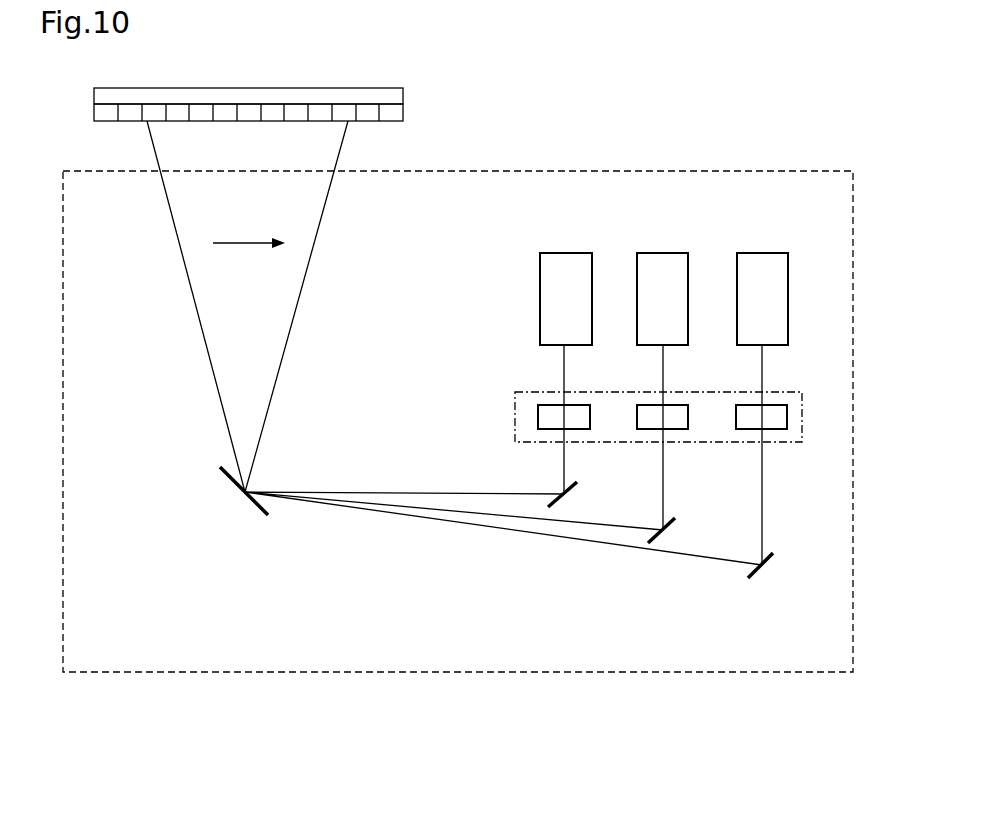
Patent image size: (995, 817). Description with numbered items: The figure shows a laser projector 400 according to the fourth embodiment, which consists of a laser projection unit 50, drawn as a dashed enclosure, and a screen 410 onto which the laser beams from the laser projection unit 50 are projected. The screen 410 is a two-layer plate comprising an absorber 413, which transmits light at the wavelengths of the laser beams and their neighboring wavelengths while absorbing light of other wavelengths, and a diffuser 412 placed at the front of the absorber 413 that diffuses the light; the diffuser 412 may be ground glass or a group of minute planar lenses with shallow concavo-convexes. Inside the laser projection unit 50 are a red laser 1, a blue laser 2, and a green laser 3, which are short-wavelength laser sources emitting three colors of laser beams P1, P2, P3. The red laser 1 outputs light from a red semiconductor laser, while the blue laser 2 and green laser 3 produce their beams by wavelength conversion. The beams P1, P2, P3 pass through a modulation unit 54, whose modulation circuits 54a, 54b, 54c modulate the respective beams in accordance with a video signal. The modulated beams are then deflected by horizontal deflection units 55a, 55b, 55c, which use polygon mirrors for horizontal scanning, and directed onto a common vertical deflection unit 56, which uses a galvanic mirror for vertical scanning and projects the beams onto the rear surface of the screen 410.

The laser projector 400 is at (676, 90).
The screen 410 is at (498, 56).
The absorber 413 is at (404, 96).
The diffuser 412 is at (404, 114).
The laser projection unit 50 is at (596, 673).
The red laser 1 is at (570, 252).
The blue laser 2 is at (668, 252).
The green laser 3 is at (767, 252).
The laser beam P1 is at (565, 352).
The laser beam P2 is at (664, 352).
The laser beam P3 is at (763, 352).
The modulation unit 54 is at (521, 392).
The modulation circuit 54a is at (538, 418).
The modulation circuit 54b is at (646, 430).
The modulation circuit 54c is at (745, 430).
The horizontal deflection unit 55a is at (580, 488).
The horizontal deflection unit 55b is at (678, 524).
The horizontal deflection unit 55c is at (754, 576).
The vertical deflection unit 56 is at (256, 505).